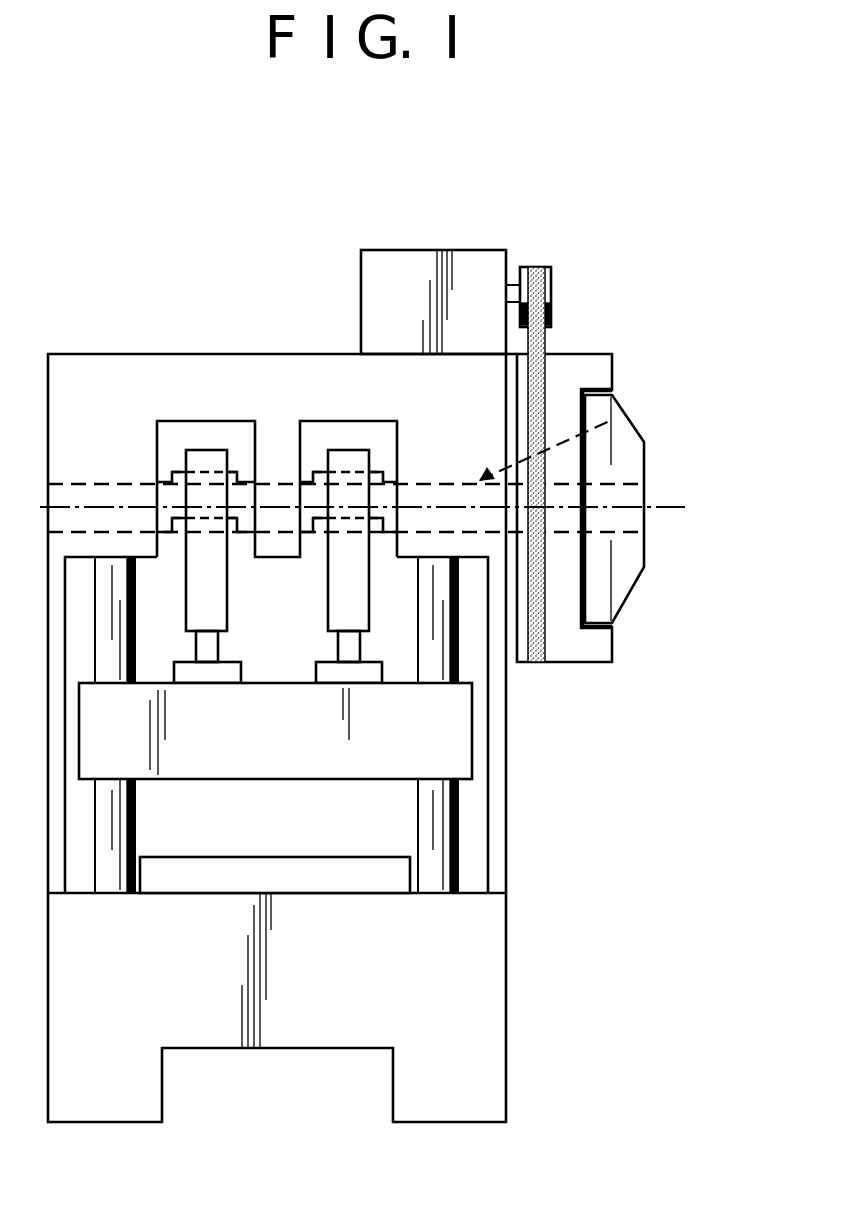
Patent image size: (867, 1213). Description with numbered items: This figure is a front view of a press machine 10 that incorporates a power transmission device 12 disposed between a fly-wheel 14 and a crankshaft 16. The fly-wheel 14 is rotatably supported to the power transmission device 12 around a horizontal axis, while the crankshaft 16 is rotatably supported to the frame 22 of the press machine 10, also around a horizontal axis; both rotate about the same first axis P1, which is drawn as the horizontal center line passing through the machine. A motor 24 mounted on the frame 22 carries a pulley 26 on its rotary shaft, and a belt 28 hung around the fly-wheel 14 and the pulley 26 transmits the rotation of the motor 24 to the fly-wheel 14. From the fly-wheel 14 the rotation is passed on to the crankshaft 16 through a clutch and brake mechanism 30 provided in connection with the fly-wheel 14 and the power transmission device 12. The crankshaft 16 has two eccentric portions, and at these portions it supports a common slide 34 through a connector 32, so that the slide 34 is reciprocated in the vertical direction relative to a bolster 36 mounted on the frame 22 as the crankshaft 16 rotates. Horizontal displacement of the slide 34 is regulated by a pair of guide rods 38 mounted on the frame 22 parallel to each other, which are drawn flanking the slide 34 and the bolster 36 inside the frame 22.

The press machine 10 is at (401, 240).
The power transmission device 12 is at (612, 422).
The fly-wheel 14 is at (612, 355).
The crankshaft 16 is at (238, 470).
The frame 22 is at (506, 842).
The motor 24 is at (473, 262).
The pulley 26 is at (553, 294).
The belt 28 is at (547, 342).
The clutch and brake mechanism 30 is at (646, 468).
The connector 32 is at (208, 448).
The slide 34 is at (187, 766).
The bolster 36 is at (323, 868).
The guide rods 38 is at (120, 877).
The first axis P1 is at (657, 512).